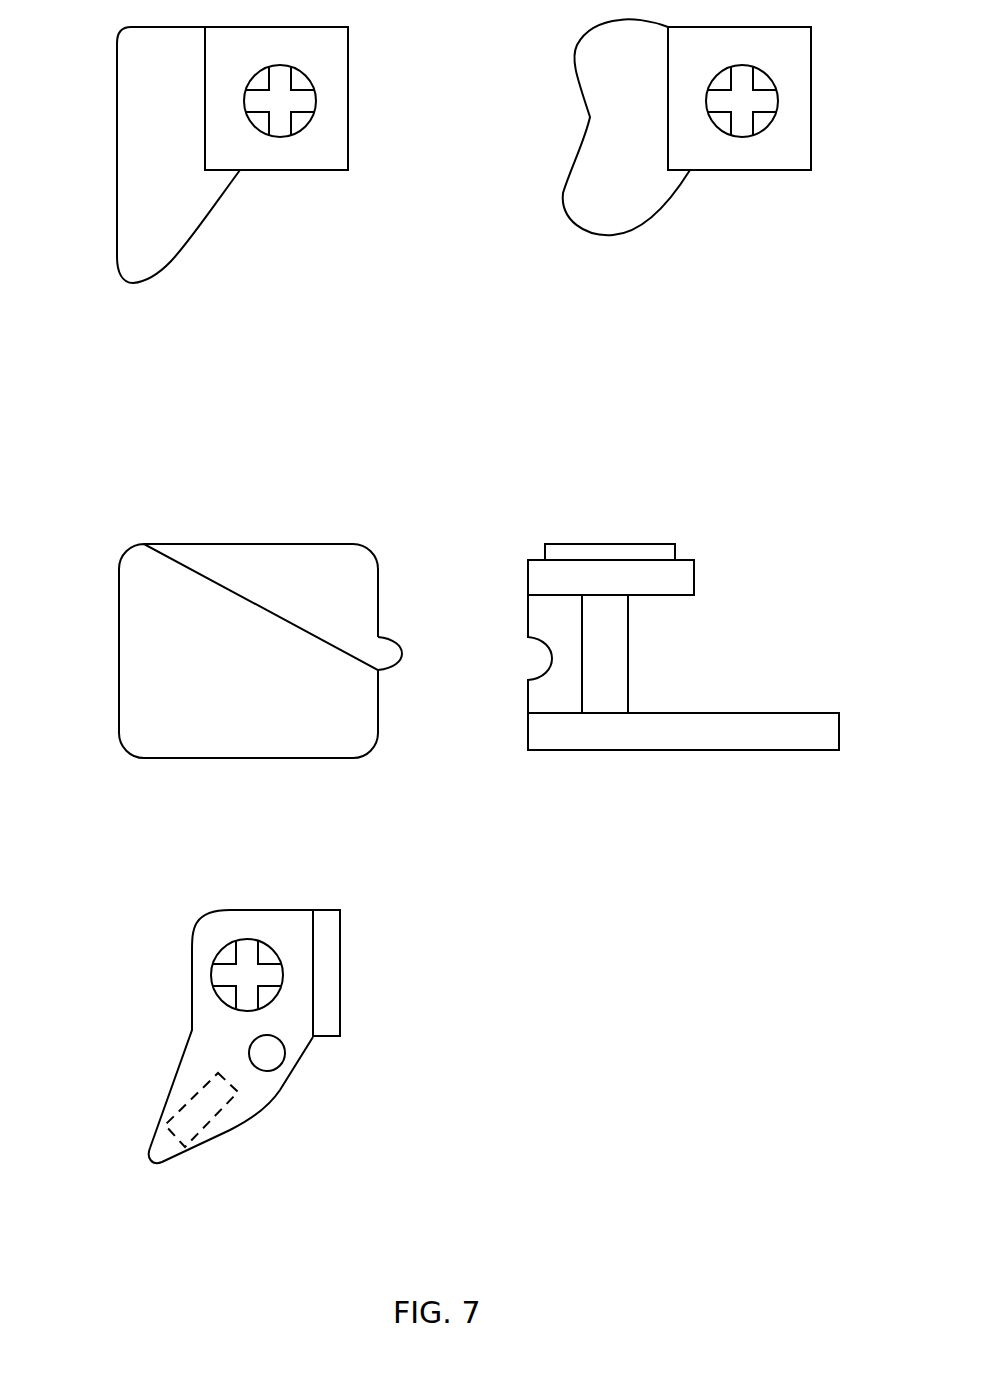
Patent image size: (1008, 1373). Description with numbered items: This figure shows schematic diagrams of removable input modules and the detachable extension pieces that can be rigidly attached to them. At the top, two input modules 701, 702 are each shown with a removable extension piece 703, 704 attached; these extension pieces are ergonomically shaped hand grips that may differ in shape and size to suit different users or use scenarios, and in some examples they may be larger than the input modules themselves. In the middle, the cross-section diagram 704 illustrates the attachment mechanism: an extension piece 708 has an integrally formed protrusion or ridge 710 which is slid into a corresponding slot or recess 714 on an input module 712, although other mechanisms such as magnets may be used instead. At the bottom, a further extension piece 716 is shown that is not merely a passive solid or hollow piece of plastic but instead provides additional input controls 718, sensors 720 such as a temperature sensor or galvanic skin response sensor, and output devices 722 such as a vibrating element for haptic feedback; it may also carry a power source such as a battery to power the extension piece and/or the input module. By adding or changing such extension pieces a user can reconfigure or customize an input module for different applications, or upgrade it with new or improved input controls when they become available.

The input module 701 is at (335, 52).
The input module 702 is at (798, 52).
The removable extension piece 703 is at (133, 123).
The removable extension piece 704 is at (592, 67).
The extension piece 708 is at (248, 651).
The protrusion 710 is at (385, 636).
The input module 712 is at (580, 748).
The slot 714 is at (538, 652).
The extension piece 716 is at (203, 1025).
The input controls 718 is at (212, 966).
The sensors 720 is at (280, 1053).
The output devices 722 is at (208, 1110).